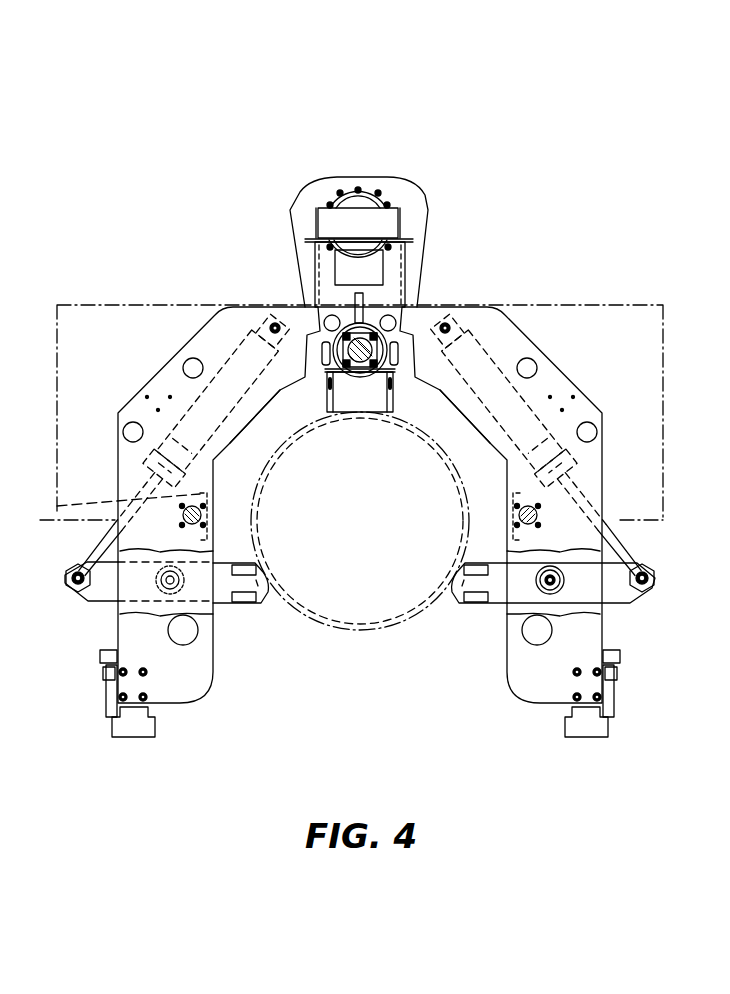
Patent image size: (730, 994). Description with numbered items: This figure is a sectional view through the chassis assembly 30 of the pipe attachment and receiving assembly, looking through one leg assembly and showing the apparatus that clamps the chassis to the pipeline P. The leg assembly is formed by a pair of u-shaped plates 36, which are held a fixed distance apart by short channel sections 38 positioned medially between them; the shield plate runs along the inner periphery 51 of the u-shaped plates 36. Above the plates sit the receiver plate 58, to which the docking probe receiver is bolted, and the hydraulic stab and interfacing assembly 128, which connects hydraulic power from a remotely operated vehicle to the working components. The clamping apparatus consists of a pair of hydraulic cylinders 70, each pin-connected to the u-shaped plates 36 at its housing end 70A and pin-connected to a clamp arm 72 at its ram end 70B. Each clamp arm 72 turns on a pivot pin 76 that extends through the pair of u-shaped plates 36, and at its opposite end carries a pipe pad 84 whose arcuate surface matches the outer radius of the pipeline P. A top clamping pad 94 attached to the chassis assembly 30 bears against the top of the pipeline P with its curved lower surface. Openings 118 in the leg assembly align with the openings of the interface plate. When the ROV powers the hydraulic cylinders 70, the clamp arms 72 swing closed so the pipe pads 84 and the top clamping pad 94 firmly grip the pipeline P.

The chassis assembly 30 is at (402, 108).
The u-shaped plates 36 is at (214, 340).
The short channel sections 38 is at (57, 506).
The inner periphery 51 is at (262, 418).
The receiver plate 58 is at (405, 183).
The hydraulic cylinders 70 is at (203, 410).
The housing end 70A is at (275, 325).
The ram end 70B is at (77, 570).
The clamp arm 72 is at (82, 594).
The pivot pin 76 is at (165, 592).
The pipe pad 84 is at (264, 604).
The top clamping pad 94 is at (395, 394).
The openings 118 is at (183, 513).
The hydraulic stab and interfacing assembly 128 is at (355, 213).
The pipeline P is at (405, 612).